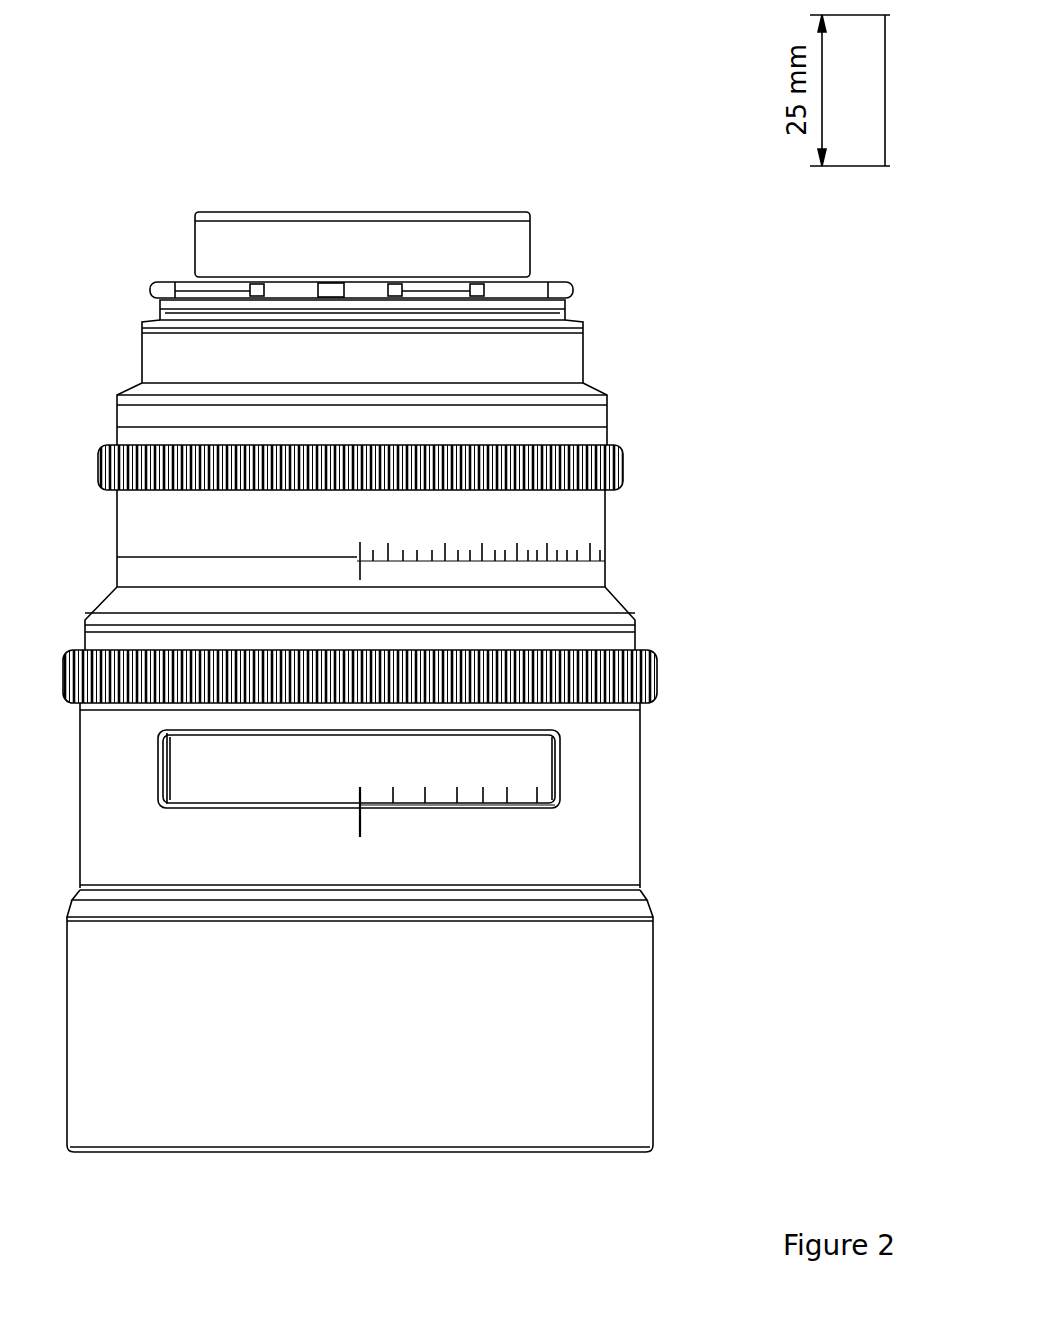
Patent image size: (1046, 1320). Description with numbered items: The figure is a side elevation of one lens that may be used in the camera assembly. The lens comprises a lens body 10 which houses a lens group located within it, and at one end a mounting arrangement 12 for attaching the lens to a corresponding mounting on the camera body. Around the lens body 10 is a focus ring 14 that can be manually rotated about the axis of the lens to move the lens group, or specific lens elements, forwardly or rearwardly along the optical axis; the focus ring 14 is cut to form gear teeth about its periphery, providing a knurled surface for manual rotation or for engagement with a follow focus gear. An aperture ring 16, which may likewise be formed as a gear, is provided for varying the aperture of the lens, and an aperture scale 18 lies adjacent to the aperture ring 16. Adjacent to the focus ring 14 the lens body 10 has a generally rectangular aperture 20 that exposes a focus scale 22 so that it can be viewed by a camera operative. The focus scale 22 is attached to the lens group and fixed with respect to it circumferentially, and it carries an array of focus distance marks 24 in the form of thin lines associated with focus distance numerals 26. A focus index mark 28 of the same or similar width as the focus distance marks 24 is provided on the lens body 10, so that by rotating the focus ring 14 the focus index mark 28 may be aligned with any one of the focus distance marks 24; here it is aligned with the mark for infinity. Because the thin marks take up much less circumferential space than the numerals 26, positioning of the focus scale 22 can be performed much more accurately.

The lens body 10 is at (636, 603).
The mounting arrangement 12 is at (357, 212).
The focus ring 14 is at (657, 665).
The aperture ring 16 is at (135, 513).
The aperture scale 18 is at (520, 538).
The generally rectangular aperture 20 is at (225, 810).
The focus scale 22 is at (197, 763).
The focus distance marks 24 is at (490, 800).
The focus distance numerals 26 is at (520, 750).
The focus index mark 28 is at (357, 813).